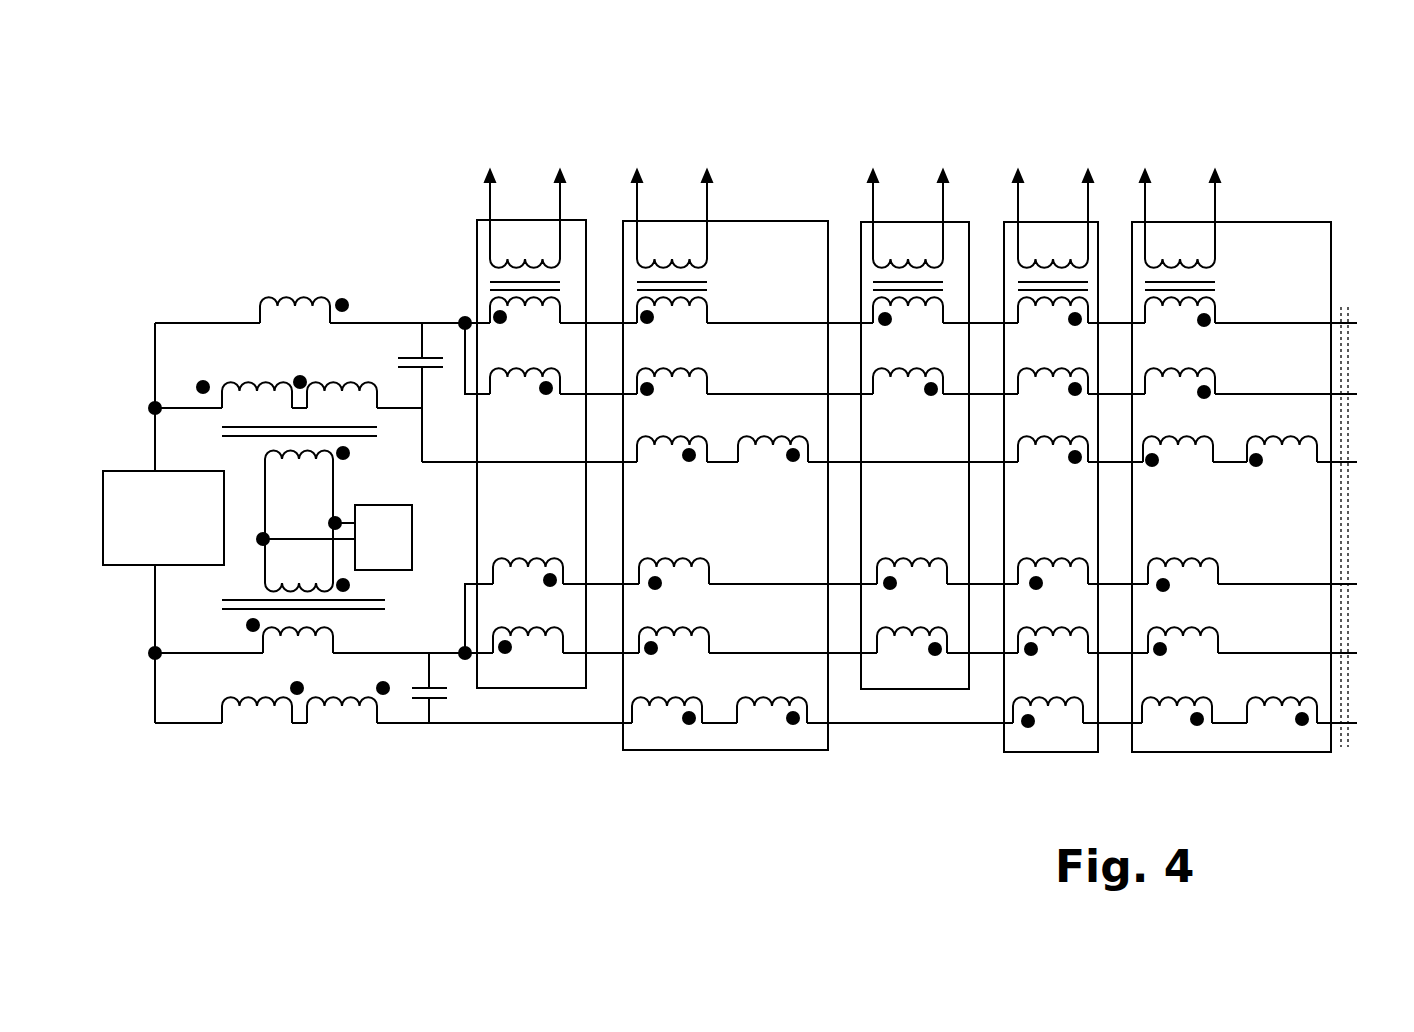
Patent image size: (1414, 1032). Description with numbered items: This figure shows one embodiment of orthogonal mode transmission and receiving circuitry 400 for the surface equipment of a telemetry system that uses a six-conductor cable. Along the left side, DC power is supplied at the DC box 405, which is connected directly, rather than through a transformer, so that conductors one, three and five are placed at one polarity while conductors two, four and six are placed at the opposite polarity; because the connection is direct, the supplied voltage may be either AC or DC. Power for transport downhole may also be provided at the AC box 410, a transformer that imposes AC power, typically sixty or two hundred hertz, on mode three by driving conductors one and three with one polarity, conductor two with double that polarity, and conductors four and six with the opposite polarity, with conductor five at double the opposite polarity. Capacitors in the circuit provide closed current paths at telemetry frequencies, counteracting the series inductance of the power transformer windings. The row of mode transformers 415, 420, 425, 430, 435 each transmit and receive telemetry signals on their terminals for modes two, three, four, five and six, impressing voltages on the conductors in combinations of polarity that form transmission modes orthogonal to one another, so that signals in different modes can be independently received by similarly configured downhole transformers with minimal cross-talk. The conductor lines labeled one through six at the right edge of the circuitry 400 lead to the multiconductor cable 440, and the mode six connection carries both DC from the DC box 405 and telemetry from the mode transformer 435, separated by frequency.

The power conversion system 400 is at (1216, 97).
The DC box 405 is at (141, 545).
The AC box 410 is at (401, 560).
The mode transformer 415 is at (958, 219).
The mode transformer 420 is at (1272, 219).
The mode transformer 425 is at (777, 216).
The mode transformer 430 is at (470, 241).
The mode transformer 435 is at (1097, 219).
The output phase bus 440 is at (1350, 311).